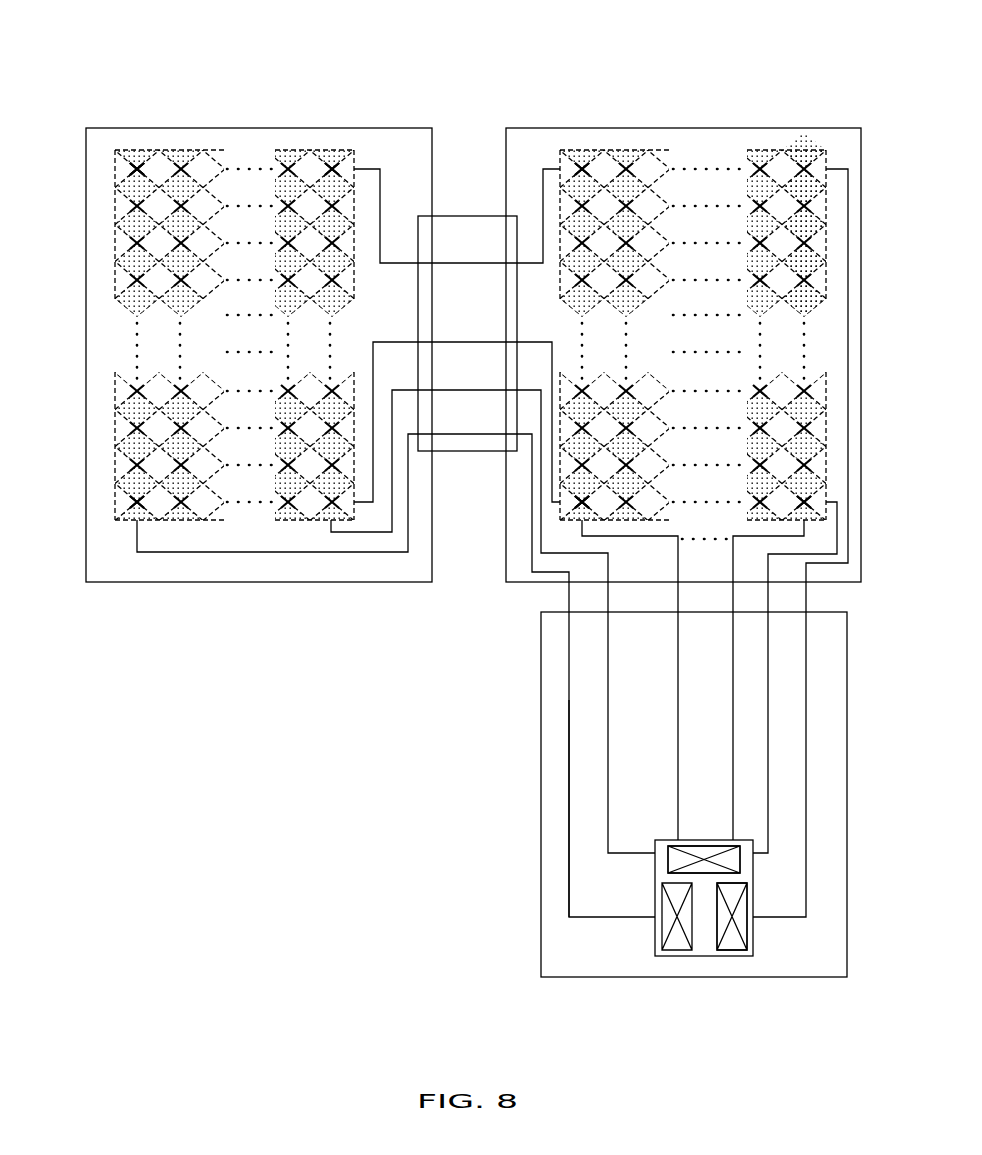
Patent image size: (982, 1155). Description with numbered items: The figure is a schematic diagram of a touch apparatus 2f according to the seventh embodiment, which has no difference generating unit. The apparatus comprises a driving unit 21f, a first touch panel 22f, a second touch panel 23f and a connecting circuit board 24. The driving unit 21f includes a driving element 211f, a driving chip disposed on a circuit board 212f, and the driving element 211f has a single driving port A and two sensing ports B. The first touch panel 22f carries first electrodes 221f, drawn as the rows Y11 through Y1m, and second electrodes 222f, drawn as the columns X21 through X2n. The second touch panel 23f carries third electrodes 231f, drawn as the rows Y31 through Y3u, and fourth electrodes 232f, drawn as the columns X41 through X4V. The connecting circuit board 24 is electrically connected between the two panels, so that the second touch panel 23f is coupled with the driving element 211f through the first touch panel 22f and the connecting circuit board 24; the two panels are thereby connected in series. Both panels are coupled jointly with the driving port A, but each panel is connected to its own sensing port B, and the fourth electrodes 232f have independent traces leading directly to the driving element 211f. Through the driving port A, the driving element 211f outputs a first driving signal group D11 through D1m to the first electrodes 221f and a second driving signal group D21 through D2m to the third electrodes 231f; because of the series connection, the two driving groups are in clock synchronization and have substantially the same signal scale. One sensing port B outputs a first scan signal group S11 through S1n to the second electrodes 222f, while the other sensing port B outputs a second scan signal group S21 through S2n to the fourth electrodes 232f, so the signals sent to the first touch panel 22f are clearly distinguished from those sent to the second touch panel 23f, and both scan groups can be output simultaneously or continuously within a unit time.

The touch apparatus 2f is at (120, 58).
The second touch panel 23f is at (371, 121).
The third electrodes 231f is at (118, 432).
The fourth electrodes 232f is at (130, 520).
The connecting circuit board 24 is at (453, 216).
The first touch panel 22f is at (643, 124).
The first electrodes 221f is at (826, 165).
The second electrodes 222f is at (802, 152).
The driving unit 21f is at (530, 734).
The circuit board 212f is at (541, 672).
The driving element 211f is at (753, 937).
The fourth electrode X41 is at (137, 157).
The fourth electrode X4V is at (331, 157).
The third electrode Y3u is at (118, 169).
The third electrode Y31 is at (118, 502).
The first electrode Y1m is at (562, 165).
The first electrode Y11 is at (563, 507).
The second electrode X21 is at (572, 522).
The second electrode X2n is at (810, 520).
The second driving signal D2m is at (493, 256).
The second driving signal D21 is at (493, 337).
The first scan signal S11 is at (662, 682).
The first scan signal S1n is at (726, 727).
The second scan signal S21 is at (578, 864).
The second scan signal S2n is at (617, 786).
The first driving signal D11 is at (774, 767).
The first driving signal D1m is at (812, 794).
The driving port A is at (735, 950).
The sensing port B is at (703, 845).